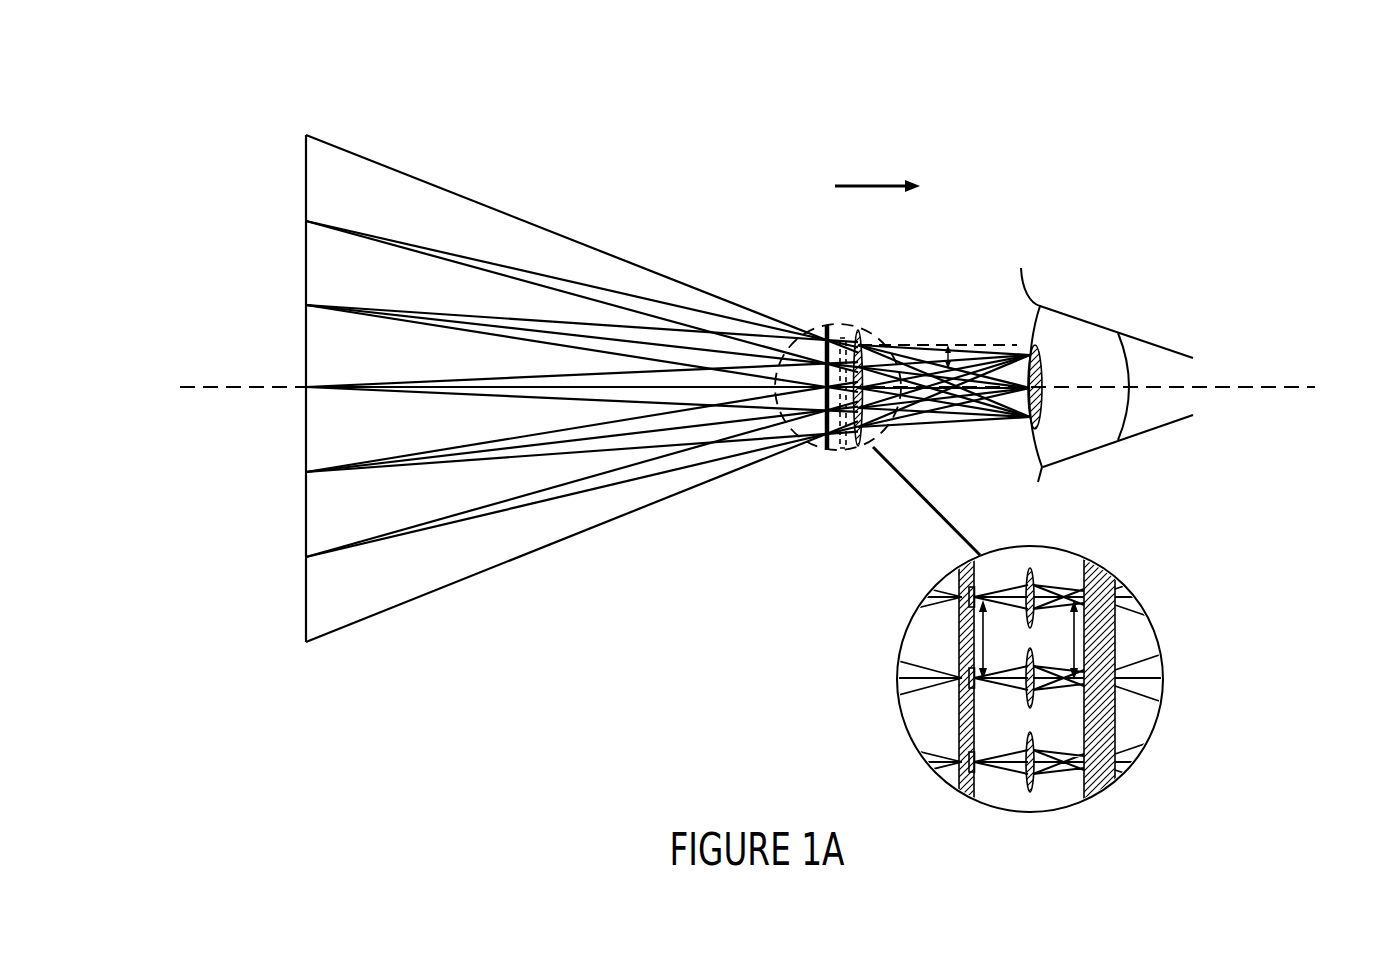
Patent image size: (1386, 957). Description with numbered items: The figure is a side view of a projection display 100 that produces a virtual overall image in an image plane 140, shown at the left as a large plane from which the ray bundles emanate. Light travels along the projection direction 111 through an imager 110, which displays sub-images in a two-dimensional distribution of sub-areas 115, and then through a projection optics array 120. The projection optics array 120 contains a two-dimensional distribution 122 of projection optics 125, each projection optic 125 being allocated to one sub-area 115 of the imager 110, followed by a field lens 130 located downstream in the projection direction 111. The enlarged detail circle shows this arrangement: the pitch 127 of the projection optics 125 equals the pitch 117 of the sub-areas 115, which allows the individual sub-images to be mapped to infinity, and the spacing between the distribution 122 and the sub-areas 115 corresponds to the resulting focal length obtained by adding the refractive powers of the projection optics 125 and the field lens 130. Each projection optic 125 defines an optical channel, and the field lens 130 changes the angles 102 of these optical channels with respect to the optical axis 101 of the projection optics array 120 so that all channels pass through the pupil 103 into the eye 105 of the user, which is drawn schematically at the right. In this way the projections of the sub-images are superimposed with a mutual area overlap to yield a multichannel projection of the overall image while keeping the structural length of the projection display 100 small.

The projection display 100 is at (166, 61).
The image plane 140 is at (306, 135).
The projection direction 111 is at (857, 186).
The imager 110 is at (826, 326).
The two-dimensional distribution of projection optics 122 is at (842, 444).
The field lens 130 is at (858, 447).
The projection optics array 120 is at (841, 315).
The angles of optical channels 102 is at (948, 345).
The pupil 103 is at (1030, 344).
The eye 105 is at (1068, 312).
The optical axis 101 is at (1255, 387).
The sub-areas 115 is at (977, 588).
The projection optics 125 is at (1030, 572).
The pitch of the sub-areas 117 is at (982, 632).
The pitch of the projection optics 127 is at (1077, 632).